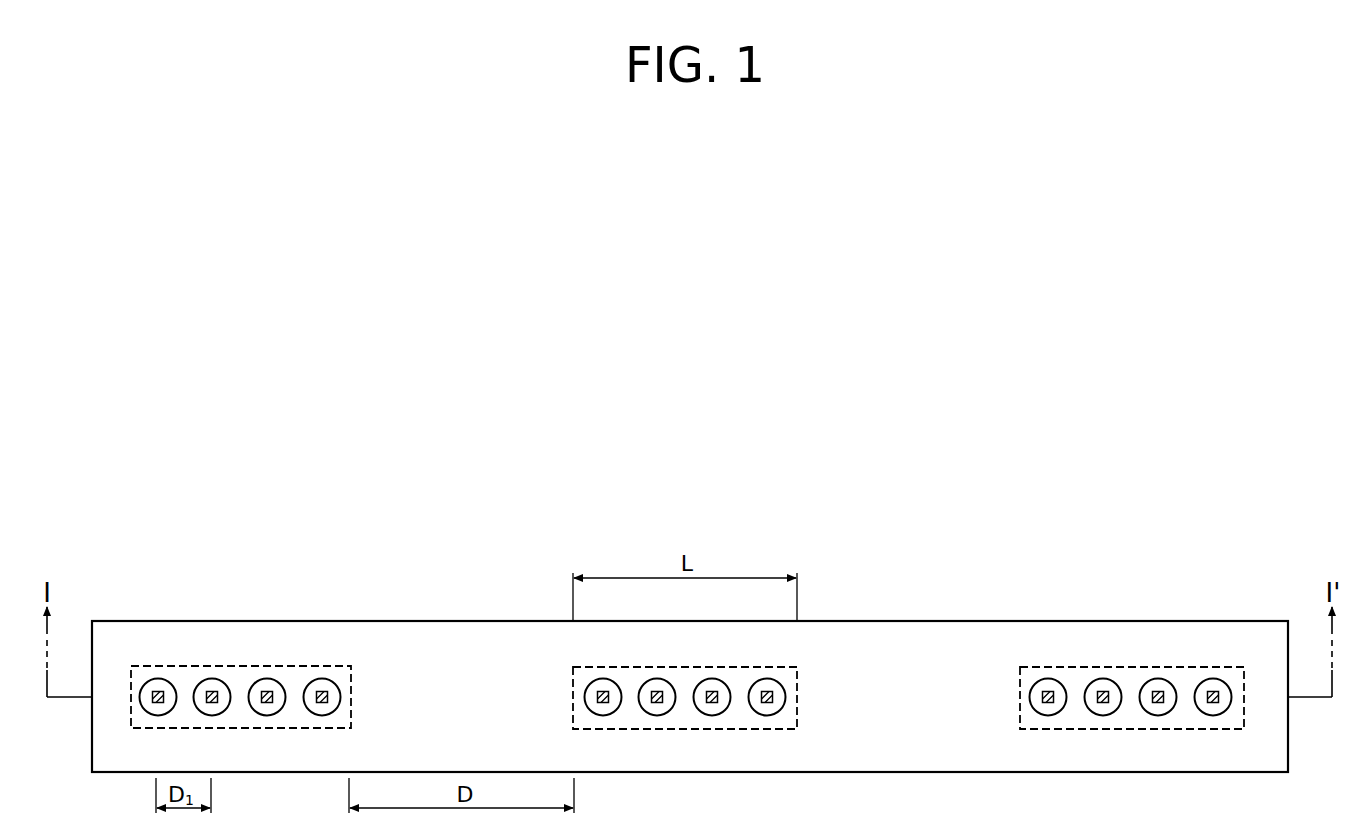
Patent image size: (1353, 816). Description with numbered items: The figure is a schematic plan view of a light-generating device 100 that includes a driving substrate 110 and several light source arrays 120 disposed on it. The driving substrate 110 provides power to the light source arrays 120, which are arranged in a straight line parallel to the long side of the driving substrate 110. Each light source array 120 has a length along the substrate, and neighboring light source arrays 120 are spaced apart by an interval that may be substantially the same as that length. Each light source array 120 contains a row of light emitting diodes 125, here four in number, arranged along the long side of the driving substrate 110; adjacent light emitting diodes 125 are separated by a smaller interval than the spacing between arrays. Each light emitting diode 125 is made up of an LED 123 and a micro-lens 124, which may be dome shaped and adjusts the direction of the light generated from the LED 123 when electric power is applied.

The light-generating device 100 is at (932, 608).
The driving substrate 110 is at (345, 627).
The light source array 120 is at (279, 665).
The light emitting diode (LED) 123 is at (156, 694).
The micro-lens 124 is at (161, 692).
The light emitting diode 125 is at (218, 551).